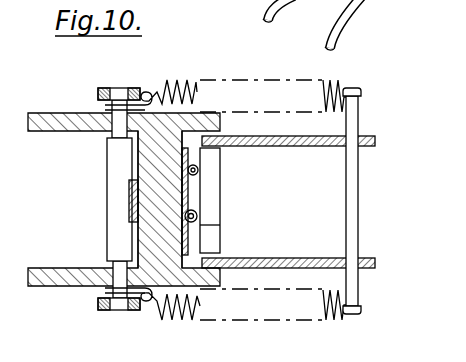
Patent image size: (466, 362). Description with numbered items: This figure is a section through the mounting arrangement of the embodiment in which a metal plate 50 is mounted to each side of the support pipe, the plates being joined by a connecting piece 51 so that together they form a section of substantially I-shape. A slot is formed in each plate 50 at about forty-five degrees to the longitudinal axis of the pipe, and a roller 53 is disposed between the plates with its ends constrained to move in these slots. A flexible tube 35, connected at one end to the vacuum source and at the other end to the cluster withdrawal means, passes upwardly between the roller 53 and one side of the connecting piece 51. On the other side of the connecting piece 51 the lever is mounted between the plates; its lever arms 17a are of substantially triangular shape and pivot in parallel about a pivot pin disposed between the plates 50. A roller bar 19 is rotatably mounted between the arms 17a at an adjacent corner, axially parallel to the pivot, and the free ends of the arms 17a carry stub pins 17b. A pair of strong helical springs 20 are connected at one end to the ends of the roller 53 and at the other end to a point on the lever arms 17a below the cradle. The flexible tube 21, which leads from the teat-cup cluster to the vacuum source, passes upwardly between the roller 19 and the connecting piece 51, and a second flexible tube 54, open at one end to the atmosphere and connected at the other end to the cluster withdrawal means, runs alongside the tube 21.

The lever arms 17a is at (311, 147).
The stub pins 17b is at (357, 206).
The roller bar 19 is at (216, 205).
The helical springs 20 is at (197, 92).
The flexible tube 21 is at (213, 231).
The flexible tube 35 is at (130, 201).
The metal plate 50 is at (63, 268).
The connecting piece 51 is at (140, 153).
The roller 53 is at (118, 88).
The second flexible tube 54 is at (357, 18).